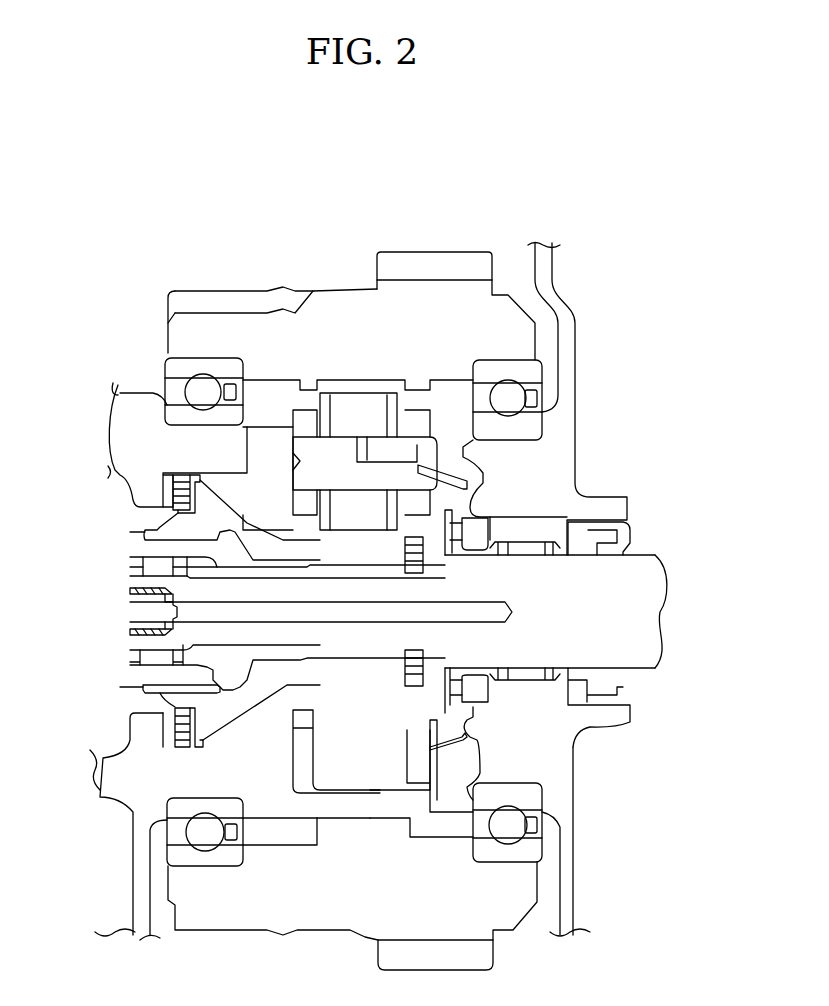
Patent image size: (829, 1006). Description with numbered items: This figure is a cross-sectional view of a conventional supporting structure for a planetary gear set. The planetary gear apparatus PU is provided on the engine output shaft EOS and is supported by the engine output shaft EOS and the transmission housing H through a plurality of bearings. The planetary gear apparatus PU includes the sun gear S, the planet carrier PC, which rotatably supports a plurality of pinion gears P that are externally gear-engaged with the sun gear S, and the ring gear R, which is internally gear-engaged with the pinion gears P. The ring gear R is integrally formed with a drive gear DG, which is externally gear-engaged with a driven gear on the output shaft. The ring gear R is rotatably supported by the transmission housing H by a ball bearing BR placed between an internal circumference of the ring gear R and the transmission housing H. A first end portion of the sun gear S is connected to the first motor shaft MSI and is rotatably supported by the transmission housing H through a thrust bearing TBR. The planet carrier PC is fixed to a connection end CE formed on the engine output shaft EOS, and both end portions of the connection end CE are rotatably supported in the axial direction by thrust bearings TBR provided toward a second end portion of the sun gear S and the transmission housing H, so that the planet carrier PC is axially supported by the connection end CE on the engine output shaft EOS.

The pinion gears P is at (347, 415).
The ring gear R is at (338, 320).
The drive gear DG is at (432, 265).
The planetary gear apparatus PU is at (516, 291).
The planet carrier PC is at (420, 417).
The ball bearing BR is at (200, 388).
The connection end CE is at (438, 517).
The transmission housing H is at (108, 438).
The thrust bearing TBR is at (180, 495).
The sun gear S is at (383, 550).
The engine output shaft EOS is at (653, 640).
The first motor shaft MSI is at (147, 677).